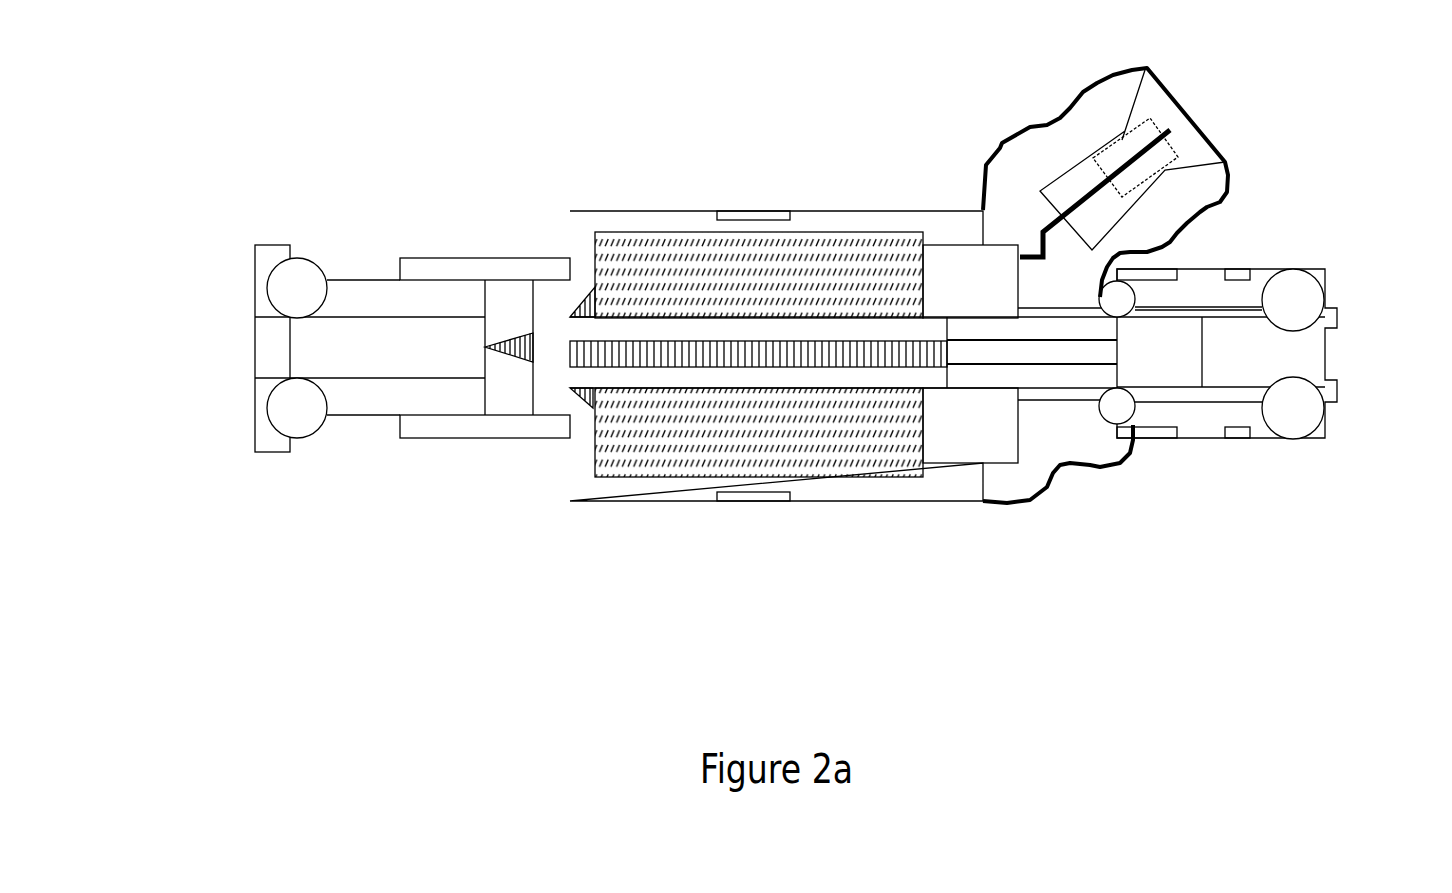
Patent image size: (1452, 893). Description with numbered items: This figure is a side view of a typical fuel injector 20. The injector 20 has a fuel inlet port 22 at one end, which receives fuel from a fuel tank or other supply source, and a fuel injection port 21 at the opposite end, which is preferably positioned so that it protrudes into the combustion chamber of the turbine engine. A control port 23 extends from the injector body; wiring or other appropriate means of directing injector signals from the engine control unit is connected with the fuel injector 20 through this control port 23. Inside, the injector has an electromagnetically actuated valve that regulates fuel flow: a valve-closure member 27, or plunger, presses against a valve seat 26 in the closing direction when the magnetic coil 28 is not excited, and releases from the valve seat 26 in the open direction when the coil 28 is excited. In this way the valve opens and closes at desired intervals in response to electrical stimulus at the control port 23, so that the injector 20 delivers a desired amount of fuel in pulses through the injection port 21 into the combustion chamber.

The fuel injector 20 is at (777, 520).
The fuel injection port 21 is at (242, 353).
The fuel inlet port 22 is at (1351, 355).
The control port 23 is at (1192, 95).
The valve seat 26 is at (564, 332).
The valve-closure member 27 is at (703, 374).
The magnetic coil 28 is at (858, 434).